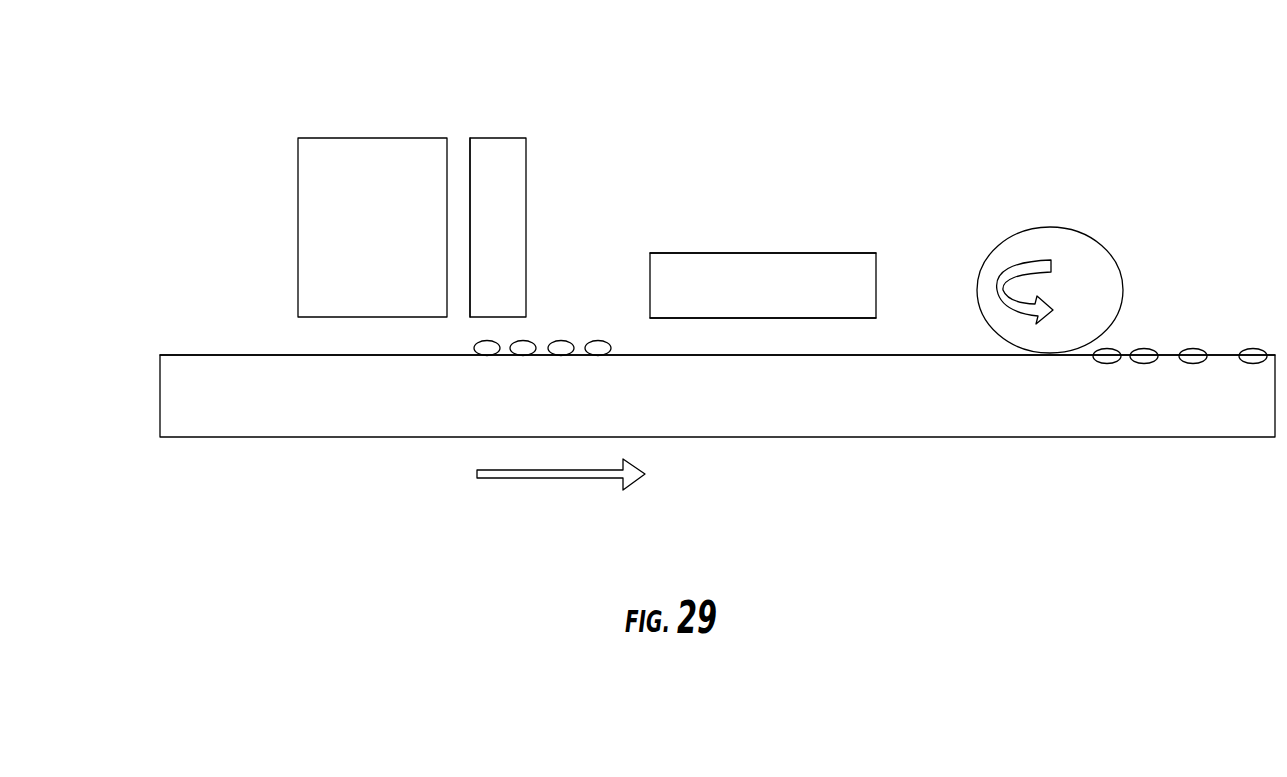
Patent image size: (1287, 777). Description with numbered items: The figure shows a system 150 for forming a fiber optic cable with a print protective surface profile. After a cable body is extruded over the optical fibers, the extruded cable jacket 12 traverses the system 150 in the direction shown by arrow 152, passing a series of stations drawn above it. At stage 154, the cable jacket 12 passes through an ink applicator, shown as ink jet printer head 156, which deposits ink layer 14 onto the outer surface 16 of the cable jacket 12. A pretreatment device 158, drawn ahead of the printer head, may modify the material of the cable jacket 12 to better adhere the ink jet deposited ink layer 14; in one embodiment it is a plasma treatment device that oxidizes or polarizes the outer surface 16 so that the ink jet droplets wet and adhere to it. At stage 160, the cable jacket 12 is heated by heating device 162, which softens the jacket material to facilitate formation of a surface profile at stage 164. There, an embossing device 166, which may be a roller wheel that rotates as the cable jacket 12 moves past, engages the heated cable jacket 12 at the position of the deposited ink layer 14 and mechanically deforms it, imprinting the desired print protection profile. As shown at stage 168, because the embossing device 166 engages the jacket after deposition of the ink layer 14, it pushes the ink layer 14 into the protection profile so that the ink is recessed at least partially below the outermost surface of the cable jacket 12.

The cable jacket 12 is at (283, 423).
The ink layer 14 is at (552, 333).
The outer surface 16 is at (265, 353).
The system 150 is at (952, 157).
The arrow 152 is at (547, 480).
The stage 154 is at (508, 123).
The ink jet printer head 156 is at (508, 211).
The pretreatment device 158 is at (387, 137).
The stage 160 is at (773, 192).
The heating device 162 is at (861, 272).
The stage 164 is at (1037, 210).
The embossing device 166 is at (1093, 253).
The stage 168 is at (1213, 375).